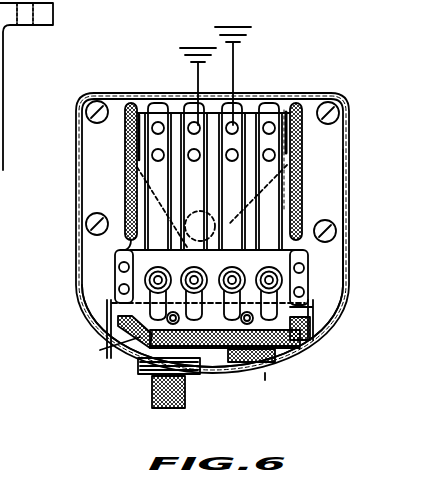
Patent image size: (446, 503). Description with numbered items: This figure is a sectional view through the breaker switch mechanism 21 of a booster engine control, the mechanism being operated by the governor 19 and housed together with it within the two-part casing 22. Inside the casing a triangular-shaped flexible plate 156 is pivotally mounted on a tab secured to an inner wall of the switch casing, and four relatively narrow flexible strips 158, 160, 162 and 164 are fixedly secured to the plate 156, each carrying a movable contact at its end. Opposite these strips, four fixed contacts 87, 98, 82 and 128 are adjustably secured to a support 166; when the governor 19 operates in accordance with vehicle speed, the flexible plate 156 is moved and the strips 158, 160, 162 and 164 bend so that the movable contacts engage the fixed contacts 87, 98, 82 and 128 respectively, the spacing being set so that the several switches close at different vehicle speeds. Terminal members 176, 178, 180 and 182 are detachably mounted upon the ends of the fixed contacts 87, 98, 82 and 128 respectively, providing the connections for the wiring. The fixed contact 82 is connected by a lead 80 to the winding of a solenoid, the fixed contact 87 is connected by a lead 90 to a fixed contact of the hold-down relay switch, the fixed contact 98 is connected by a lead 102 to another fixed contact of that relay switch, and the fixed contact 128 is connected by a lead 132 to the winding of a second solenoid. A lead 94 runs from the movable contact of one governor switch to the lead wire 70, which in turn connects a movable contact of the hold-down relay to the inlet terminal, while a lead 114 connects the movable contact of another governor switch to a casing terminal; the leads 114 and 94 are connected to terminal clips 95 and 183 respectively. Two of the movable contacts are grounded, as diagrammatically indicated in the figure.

The governor 19 is at (320, 93).
The two-part casing 22 is at (275, 93).
The lead wire 70 is at (323, 360).
The lead 94 is at (305, 195).
The flexible strip 164 is at (153, 170).
The flexible strip 158 is at (300, 175).
The triangular-shaped flexible plate 156 is at (173, 97).
The flexible strip 162 is at (175, 123).
The flexible strip 160 is at (243, 165).
The fixed contact 98 is at (145, 279).
The fixed contact 82 is at (193, 267).
The fixed contact 128 is at (230, 267).
The fixed contact 87 is at (266, 267).
The support 166 is at (115, 258).
The terminal clip 183 is at (123, 250).
The terminal clip 95 is at (300, 280).
The breaker switch mechanism 21 is at (316, 293).
The terminal member 176 is at (323, 330).
The terminal member 182 is at (163, 305).
The lead 114 is at (123, 185).
The lead 102 is at (130, 343).
The terminal member 178 is at (237, 373).
The lead 132 is at (208, 367).
The lead 80 is at (127, 363).
The terminal member 180 is at (160, 405).
The lead 90 is at (265, 373).